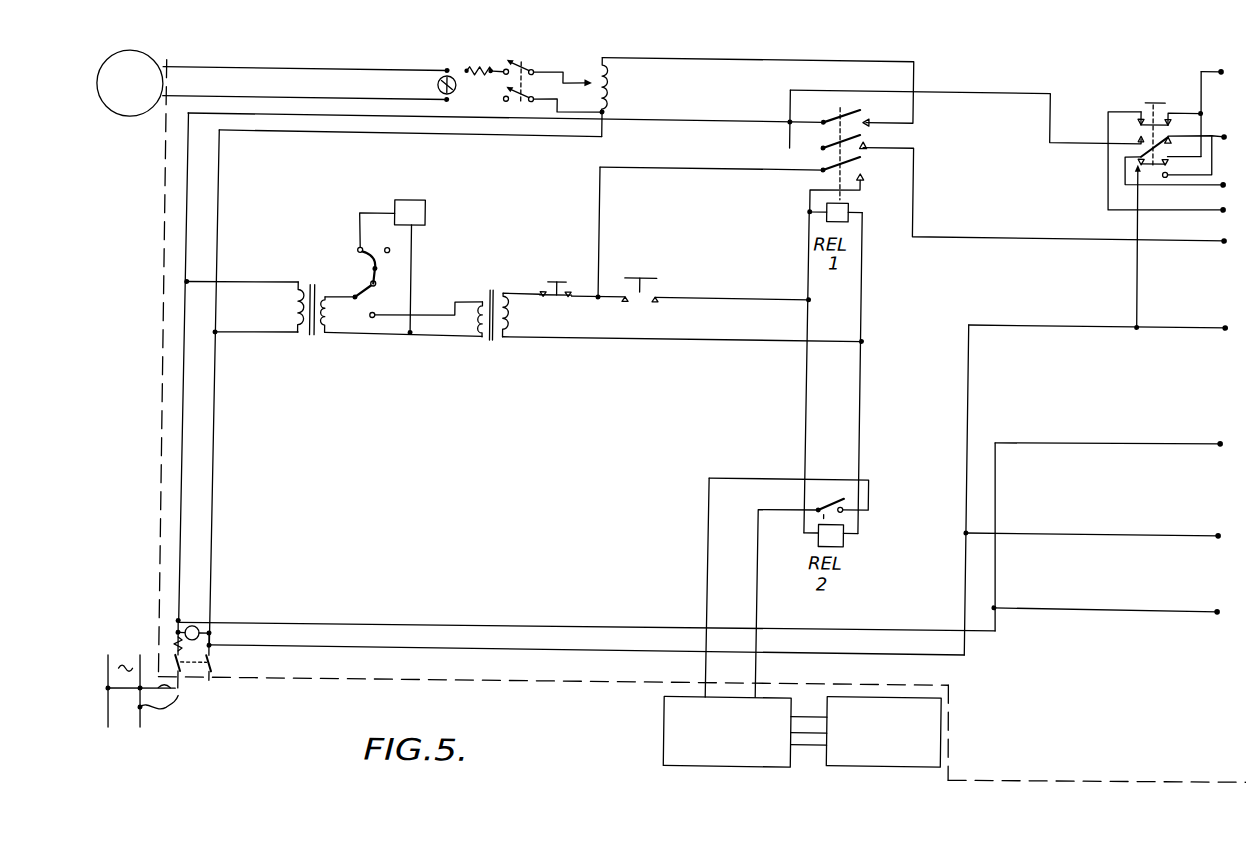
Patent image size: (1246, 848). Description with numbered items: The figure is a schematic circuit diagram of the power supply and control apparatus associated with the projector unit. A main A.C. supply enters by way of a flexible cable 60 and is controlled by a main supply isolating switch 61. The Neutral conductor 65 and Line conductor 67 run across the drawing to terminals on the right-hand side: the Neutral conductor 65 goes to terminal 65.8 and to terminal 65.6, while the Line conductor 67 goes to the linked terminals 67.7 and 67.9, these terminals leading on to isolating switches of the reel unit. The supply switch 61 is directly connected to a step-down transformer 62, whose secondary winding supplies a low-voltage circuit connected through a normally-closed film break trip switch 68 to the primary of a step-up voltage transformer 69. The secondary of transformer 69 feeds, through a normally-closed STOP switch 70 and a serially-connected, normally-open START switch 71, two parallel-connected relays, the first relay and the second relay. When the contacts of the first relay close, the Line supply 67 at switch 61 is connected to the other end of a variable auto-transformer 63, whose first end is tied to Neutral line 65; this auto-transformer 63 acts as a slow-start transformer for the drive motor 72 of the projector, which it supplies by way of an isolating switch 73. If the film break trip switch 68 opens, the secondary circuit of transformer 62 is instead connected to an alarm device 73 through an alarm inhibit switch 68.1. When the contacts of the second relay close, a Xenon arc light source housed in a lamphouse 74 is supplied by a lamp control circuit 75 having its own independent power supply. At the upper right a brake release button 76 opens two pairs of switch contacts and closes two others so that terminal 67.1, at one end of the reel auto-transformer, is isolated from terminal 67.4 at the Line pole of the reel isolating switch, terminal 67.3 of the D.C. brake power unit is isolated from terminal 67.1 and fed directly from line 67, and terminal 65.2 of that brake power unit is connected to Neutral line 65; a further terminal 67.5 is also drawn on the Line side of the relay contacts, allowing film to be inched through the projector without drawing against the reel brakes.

The flexible cable 60 is at (183, 712).
The main supply isolating switch 61 is at (219, 663).
The step-down transformer 62 is at (316, 335).
The variable auto-transformer 63 is at (608, 84).
The Neutral conductor 65 is at (228, 329).
The Line conductor 67 is at (727, 53).
The film break trip switch 68 is at (378, 297).
The alarm inhibit switch 68.1 is at (368, 267).
The step-up voltage transformer 69 is at (503, 337).
The STOP switch 70 is at (560, 276).
The START switch 71 is at (648, 260).
The drive motor 72 is at (138, 119).
The alarm device / isolating switch 73 is at (533, 78).
The lamphouse 74 is at (898, 688).
The lamp control circuit 75 is at (781, 690).
The brake release button 76 is at (1152, 89).
The terminal 67.1 is at (1215, 58).
The terminal 65.2 is at (1198, 149).
The terminal 67.3 is at (1220, 168).
The terminal 67.4 is at (1220, 195).
The terminal 67.5 is at (1222, 229).
The terminal 65.6 is at (1225, 316).
The terminal 67.7 is at (1220, 428).
The terminal 65.8 is at (1220, 522).
The terminal 67.9 is at (1220, 598).